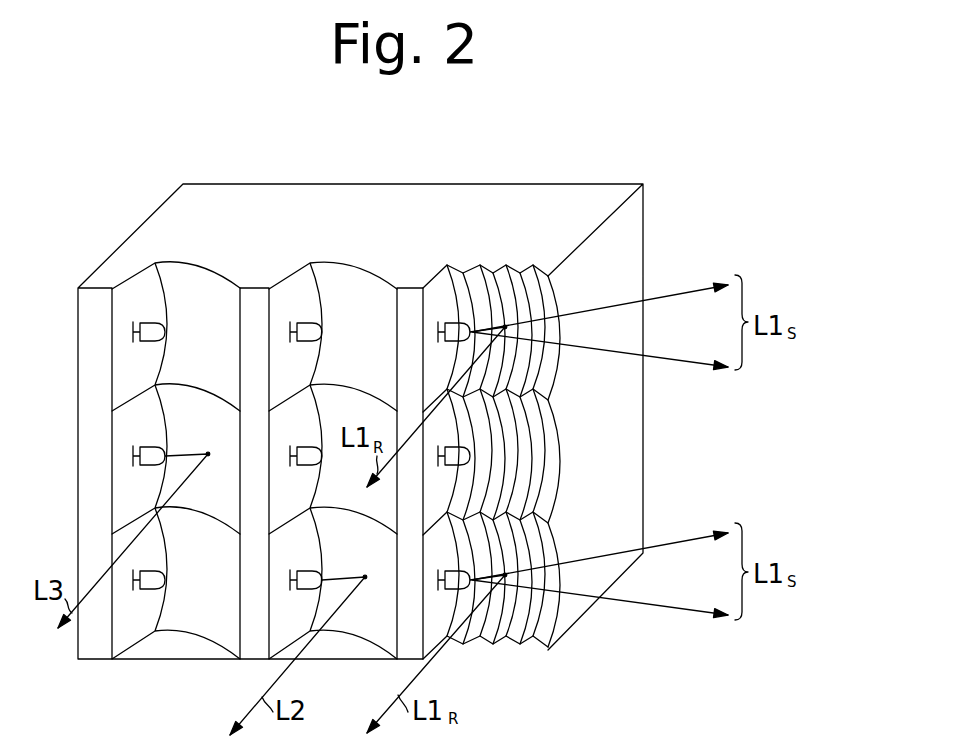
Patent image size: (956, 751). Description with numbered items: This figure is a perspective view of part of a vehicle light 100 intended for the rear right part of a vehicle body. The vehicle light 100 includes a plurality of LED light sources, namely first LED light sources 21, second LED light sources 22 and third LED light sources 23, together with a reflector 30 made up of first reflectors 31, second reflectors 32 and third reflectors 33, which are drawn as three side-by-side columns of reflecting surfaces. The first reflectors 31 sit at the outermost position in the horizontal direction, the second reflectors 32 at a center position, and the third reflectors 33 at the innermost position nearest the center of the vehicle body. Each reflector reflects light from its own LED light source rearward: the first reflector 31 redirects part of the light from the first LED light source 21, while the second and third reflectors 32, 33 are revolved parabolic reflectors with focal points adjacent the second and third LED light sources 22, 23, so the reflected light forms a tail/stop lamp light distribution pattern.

The vehicle light 100 is at (411, 151).
The reflector 30 is at (526, 193).
The first reflector 31 is at (515, 278).
The second reflector 32 is at (350, 276).
The third reflector 33 is at (195, 276).
The first LED light source 21 is at (452, 324).
The second LED light source 22 is at (306, 323).
The third LED light source 23 is at (151, 323).